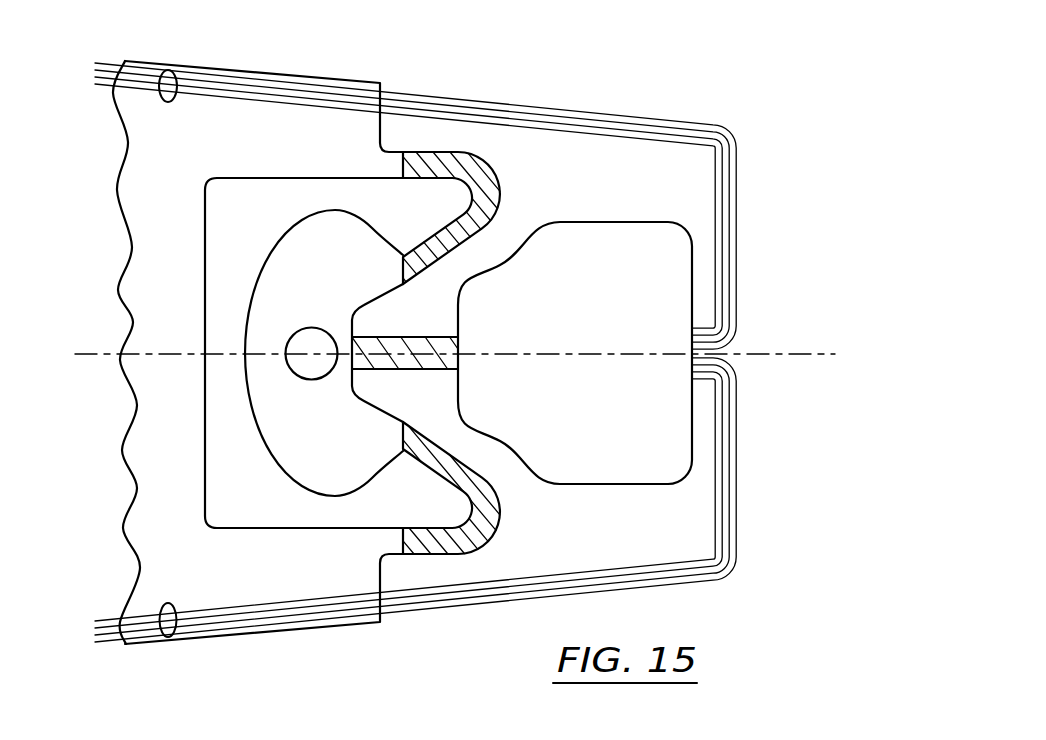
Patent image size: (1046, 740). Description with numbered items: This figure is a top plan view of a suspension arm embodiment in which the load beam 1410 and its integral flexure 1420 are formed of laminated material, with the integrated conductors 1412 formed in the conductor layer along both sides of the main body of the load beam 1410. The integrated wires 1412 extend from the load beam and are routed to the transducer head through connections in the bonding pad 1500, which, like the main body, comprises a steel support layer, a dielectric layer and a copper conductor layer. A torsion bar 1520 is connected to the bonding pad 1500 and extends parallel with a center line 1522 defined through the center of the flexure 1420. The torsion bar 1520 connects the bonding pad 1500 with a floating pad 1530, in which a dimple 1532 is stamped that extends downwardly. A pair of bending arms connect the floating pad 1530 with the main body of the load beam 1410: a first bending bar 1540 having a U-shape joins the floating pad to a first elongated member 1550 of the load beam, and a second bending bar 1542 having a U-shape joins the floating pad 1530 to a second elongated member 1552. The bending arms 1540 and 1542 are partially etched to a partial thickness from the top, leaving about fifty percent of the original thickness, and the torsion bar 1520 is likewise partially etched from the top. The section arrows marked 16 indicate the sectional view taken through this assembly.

The load beam 1410 is at (145, 232).
The integrated conductors 1412 is at (168, 70).
The integral flexure 1420 is at (666, 185).
The bonding pad 1500 is at (665, 303).
The torsion bar 1520 is at (406, 346).
The center line 1522 is at (790, 354).
The floating pad 1530 is at (300, 250).
The dimple 1532 is at (311, 327).
The first bending bar 1540 is at (486, 189).
The second bending bar 1542 is at (487, 505).
The first elongated member 1550 is at (283, 150).
The second elongated member 1552 is at (329, 560).
The section line 16- 16 is at (85, 354).